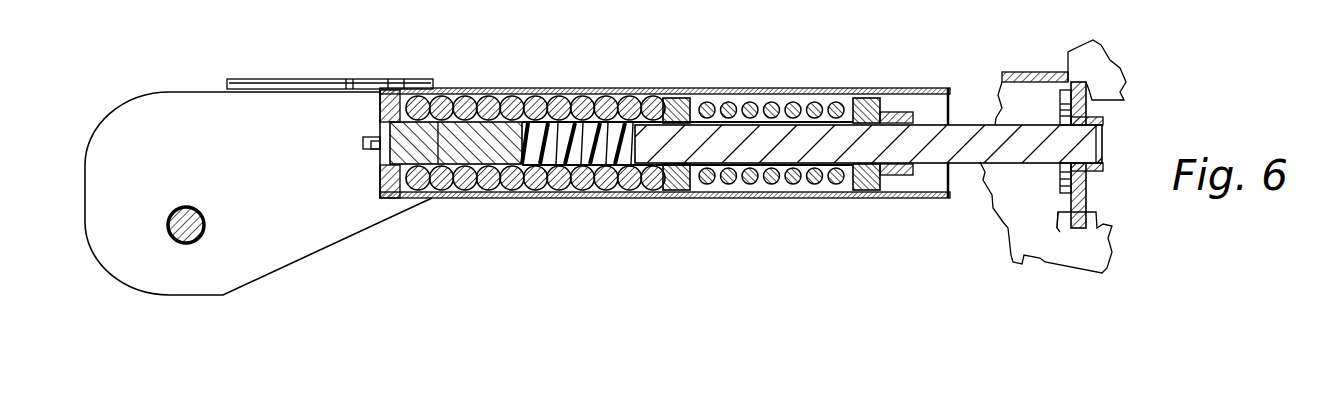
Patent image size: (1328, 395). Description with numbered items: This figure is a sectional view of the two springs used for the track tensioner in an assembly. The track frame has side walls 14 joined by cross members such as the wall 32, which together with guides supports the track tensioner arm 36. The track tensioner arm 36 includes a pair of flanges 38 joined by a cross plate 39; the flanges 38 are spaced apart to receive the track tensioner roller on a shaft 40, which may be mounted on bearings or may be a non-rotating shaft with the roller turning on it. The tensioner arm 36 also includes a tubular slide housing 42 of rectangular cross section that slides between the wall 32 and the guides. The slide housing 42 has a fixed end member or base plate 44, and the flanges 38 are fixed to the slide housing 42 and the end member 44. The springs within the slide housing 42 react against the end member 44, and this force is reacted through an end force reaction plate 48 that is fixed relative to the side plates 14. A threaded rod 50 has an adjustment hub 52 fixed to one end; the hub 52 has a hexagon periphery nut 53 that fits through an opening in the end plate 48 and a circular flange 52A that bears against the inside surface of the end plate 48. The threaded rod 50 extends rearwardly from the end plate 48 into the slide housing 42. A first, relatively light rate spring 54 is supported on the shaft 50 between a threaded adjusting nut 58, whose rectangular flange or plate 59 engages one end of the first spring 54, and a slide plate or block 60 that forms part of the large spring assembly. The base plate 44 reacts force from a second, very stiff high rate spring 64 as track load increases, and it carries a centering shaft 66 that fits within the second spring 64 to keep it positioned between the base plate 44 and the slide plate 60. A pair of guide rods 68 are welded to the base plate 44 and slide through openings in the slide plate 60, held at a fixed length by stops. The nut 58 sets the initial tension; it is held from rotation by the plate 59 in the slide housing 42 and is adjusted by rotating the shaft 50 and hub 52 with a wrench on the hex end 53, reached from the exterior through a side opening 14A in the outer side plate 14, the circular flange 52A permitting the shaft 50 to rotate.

The side walls 14 is at (1018, 265).
The side opening 14A is at (1075, 268).
The wall 32 is at (1007, 72).
The track tensioner arm 36 is at (543, 74).
The flanges 38 is at (263, 258).
The cross plate 39 is at (368, 84).
The shaft 40 is at (178, 212).
The tubular slide housing 42 is at (717, 89).
The end member or base plate 44 is at (380, 103).
The end force reaction plate 48 is at (1058, 216).
The threaded rod 50 is at (937, 165).
The adjustment hub 52 is at (1060, 108).
The circular flange 52A is at (1065, 188).
The hexagon periphery nut 53 is at (1098, 171).
The first spring 54 is at (793, 103).
The threaded adjusting nut 58 is at (900, 112).
The rectangular flange or plate 59 is at (870, 188).
The slide plate or block 60 is at (690, 193).
The second spring 64 is at (557, 93).
The centering shaft 66 is at (437, 104).
The guide rods 68 is at (370, 149).